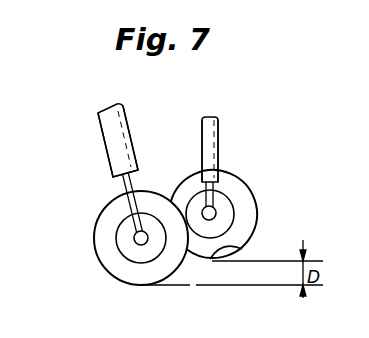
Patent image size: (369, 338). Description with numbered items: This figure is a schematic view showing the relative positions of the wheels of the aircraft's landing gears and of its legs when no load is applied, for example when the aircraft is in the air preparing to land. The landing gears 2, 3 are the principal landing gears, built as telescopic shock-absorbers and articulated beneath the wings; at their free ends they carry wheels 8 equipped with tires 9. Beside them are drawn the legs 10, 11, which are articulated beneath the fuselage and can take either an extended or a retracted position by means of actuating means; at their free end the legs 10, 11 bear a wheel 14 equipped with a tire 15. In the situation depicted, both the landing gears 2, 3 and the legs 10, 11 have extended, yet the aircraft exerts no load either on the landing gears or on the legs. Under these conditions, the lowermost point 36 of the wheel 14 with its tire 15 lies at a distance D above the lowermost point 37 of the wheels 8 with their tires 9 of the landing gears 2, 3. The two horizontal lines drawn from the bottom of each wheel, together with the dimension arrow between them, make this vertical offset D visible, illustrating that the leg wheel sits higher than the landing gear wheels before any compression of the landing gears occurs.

The landing gear 2 is at (106, 123).
The landing gear 3 is at (118, 141).
The wheel 8 is at (130, 248).
The tire 9 is at (107, 222).
The leg 10 is at (218, 132).
The leg 11 is at (210, 151).
The wheel 14 is at (226, 202).
The tire 15 is at (252, 203).
The lowermost point of the leg wheel 36 is at (241, 250).
The lowermost point of the landing gear wheel 37 is at (143, 285).